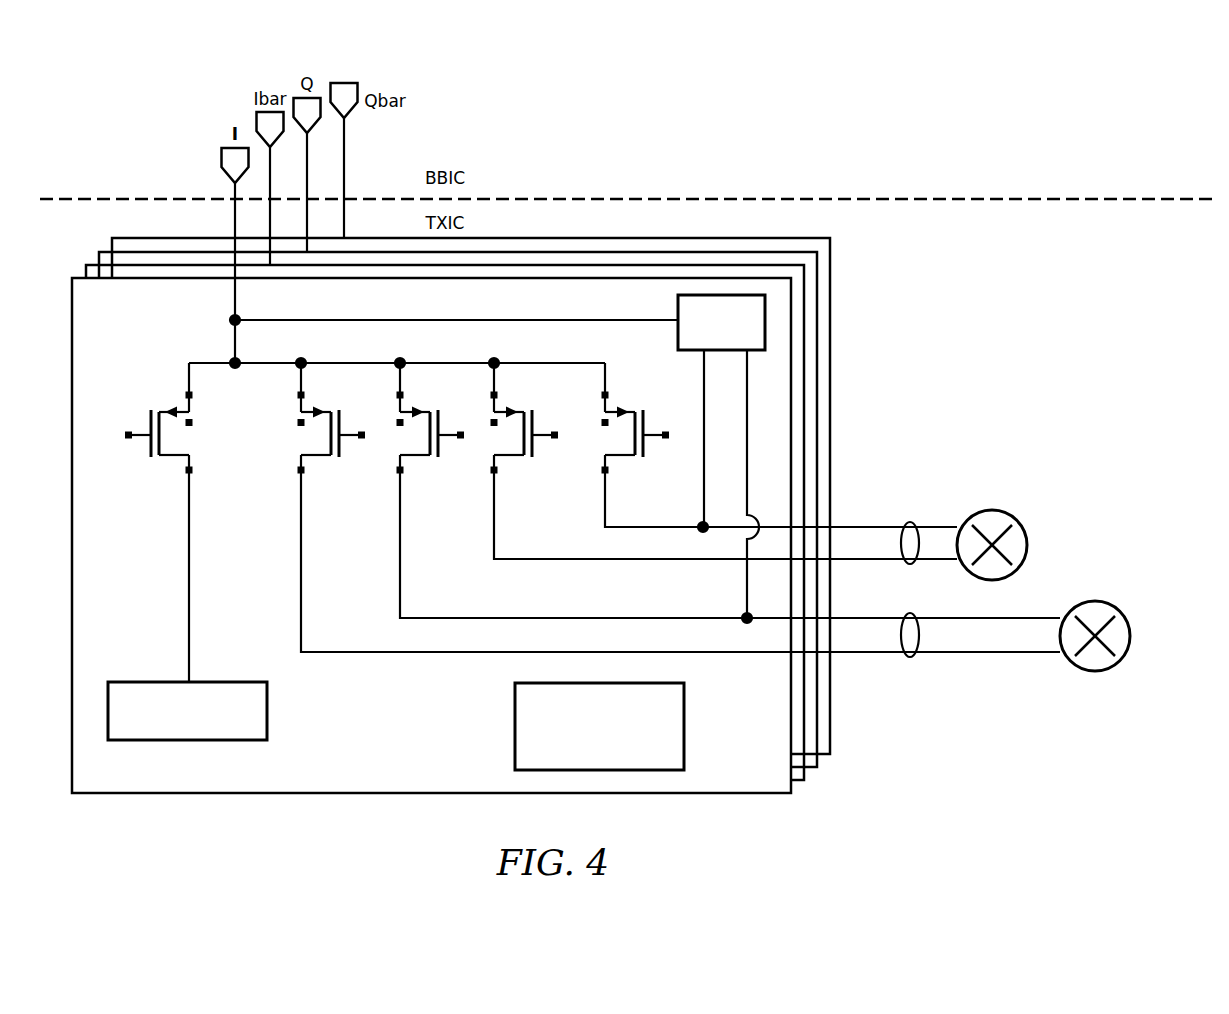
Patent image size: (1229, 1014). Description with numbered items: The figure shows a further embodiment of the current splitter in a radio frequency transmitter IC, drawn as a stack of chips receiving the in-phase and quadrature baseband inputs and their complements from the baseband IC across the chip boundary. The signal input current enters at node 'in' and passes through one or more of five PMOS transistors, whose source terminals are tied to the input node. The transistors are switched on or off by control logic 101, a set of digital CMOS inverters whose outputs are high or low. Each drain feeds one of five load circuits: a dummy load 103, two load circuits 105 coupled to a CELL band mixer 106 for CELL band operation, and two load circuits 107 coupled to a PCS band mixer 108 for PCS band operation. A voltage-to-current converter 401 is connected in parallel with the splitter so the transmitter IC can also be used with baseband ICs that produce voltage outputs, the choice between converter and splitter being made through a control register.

The voltage-to-current converter (V2I) 401 is at (678, 334).
The dummy load 103 is at (267, 712).
The control logic 101 is at (599, 726).
The load circuits 105 is at (905, 524).
The CELL band mixer 106 is at (1027, 545).
The load circuits 107 is at (910, 657).
The PCS band mixer 108 is at (1130, 636).